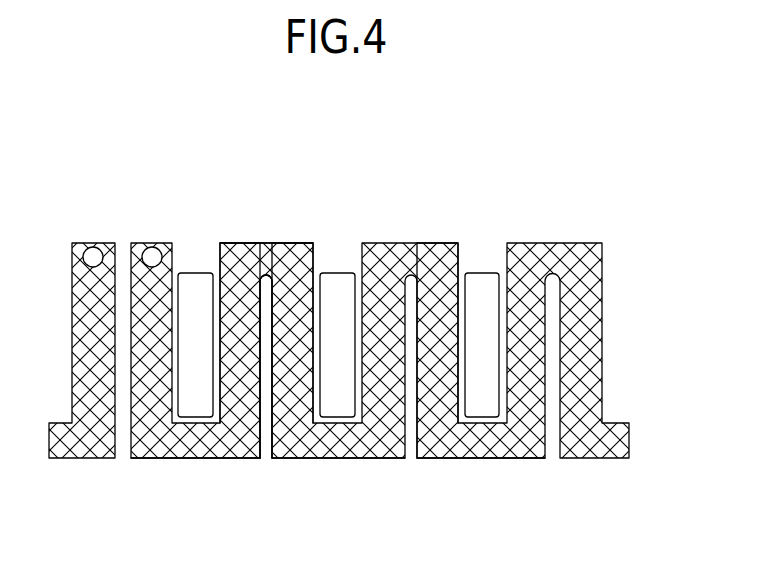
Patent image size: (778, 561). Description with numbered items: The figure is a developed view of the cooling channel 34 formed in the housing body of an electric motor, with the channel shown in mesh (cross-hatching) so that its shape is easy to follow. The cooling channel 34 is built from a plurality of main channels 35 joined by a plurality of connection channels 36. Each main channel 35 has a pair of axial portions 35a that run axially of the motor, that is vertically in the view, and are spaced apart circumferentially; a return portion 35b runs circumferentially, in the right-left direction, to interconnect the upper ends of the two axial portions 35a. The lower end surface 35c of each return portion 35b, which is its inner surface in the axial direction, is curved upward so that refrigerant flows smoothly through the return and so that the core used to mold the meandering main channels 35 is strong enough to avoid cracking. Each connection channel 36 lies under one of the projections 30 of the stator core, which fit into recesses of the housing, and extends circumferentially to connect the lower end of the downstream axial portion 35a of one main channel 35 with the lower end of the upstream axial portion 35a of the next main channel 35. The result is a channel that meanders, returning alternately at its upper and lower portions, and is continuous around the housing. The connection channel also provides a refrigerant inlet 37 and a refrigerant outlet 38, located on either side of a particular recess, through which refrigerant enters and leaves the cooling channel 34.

The projection 30 is at (195, 272).
The cooling channel 34 is at (429, 245).
The main channel 35 is at (203, 165).
The axial portion 35a is at (243, 340).
The return portion 35b is at (266, 252).
The lower end surface 35c is at (266, 282).
The connection channel 36 is at (183, 460).
The refrigerant inlet 37 is at (152, 247).
The refrigerant outlet 38 is at (98, 247).